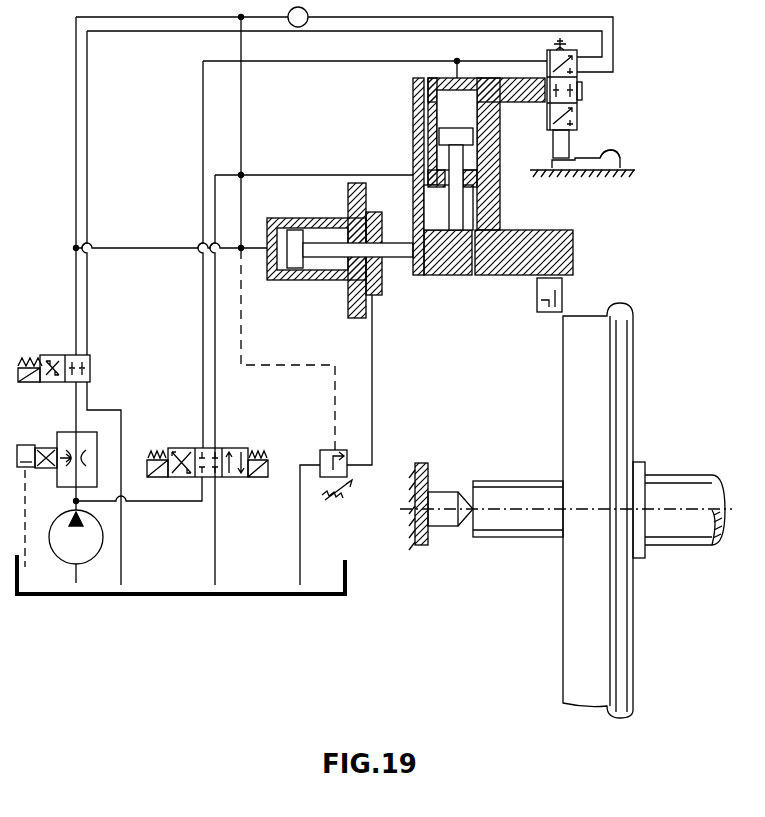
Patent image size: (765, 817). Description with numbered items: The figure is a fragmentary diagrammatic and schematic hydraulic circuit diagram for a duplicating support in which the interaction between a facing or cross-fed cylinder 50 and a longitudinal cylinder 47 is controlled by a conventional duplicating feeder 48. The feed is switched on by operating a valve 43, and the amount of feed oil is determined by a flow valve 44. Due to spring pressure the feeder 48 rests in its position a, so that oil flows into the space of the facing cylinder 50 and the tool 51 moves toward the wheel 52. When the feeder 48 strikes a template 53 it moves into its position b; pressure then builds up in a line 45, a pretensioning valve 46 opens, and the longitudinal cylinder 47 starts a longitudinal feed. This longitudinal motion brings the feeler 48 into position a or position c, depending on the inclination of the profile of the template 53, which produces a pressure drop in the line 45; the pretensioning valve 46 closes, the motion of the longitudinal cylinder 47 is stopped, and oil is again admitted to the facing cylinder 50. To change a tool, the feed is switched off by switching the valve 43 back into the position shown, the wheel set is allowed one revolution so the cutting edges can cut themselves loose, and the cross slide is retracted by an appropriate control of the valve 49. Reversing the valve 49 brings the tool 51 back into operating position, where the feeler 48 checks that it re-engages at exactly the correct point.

The valve 43 is at (28, 355).
The flow valve 44 is at (26, 440).
The line 45 is at (277, 364).
The pretensioning valve 46 is at (298, 489).
The longitudinal cylinder 47 is at (290, 215).
The duplicating feeder 48 is at (566, 146).
The valve 49 is at (230, 440).
The facing cylinder 50 is at (443, 147).
The tool 51 is at (553, 292).
The wheel 52 is at (590, 411).
The template 53 is at (616, 154).